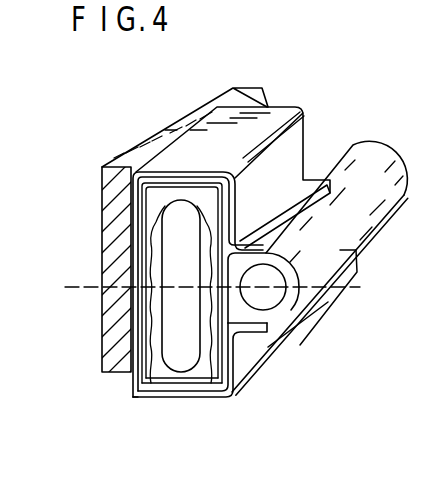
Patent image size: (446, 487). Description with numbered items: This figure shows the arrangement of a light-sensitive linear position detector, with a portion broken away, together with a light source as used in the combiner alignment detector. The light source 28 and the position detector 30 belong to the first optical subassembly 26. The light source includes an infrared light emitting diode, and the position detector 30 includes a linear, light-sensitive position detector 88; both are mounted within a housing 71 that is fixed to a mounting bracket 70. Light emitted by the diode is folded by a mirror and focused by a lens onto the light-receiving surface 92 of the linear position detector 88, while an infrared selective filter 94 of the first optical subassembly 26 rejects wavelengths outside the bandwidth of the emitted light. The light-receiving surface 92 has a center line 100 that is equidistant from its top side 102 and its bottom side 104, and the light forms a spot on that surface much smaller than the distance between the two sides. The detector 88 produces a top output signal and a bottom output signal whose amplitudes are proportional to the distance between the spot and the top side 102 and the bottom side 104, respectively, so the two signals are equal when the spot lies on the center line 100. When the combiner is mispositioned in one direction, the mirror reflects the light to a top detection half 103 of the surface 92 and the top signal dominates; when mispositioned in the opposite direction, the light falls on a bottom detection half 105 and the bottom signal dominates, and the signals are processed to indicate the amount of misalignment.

The first optical subassembly 26 is at (84, 125).
The light source 28 is at (367, 171).
The position detector 30 is at (128, 344).
The mounting bracket 70 is at (102, 183).
The housing 71 is at (283, 112).
The linear light-sensitive position detector 88 is at (158, 356).
The light-receiving surface 92 is at (176, 305).
The infrared selective filter 94 is at (147, 253).
The center line 100 is at (79, 286).
The top side 102 is at (203, 222).
The top detection half 103 is at (250, 188).
The bottom side 104 is at (180, 371).
The bottom detection half 105 is at (270, 349).